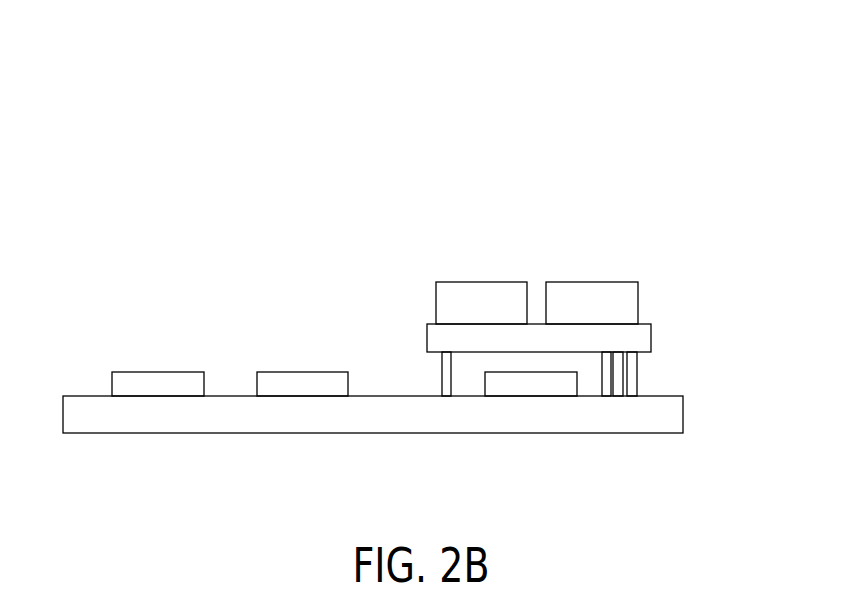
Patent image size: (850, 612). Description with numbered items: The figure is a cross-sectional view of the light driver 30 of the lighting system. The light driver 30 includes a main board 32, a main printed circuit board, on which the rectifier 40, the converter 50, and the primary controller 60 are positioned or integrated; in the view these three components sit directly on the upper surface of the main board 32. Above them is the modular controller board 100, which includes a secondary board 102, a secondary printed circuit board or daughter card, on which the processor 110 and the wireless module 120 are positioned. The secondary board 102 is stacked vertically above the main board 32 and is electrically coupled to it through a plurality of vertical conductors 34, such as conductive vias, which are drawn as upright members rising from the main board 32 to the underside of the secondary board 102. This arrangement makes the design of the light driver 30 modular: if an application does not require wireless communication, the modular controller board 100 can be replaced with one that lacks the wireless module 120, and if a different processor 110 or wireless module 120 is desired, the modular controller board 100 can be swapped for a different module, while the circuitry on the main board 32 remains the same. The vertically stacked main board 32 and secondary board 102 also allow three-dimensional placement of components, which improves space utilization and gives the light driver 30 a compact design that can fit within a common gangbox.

The light driver 30 is at (757, 123).
The main board 32 is at (660, 396).
The vertical conductors 34 is at (441, 378).
The rectifier 40 is at (158, 372).
The converter 50 is at (303, 372).
The primary controller 60 is at (541, 385).
The modular controller board 100 is at (575, 287).
The secondary board 102 is at (651, 337).
The processor 110 is at (628, 297).
The wireless module 120 is at (436, 305).